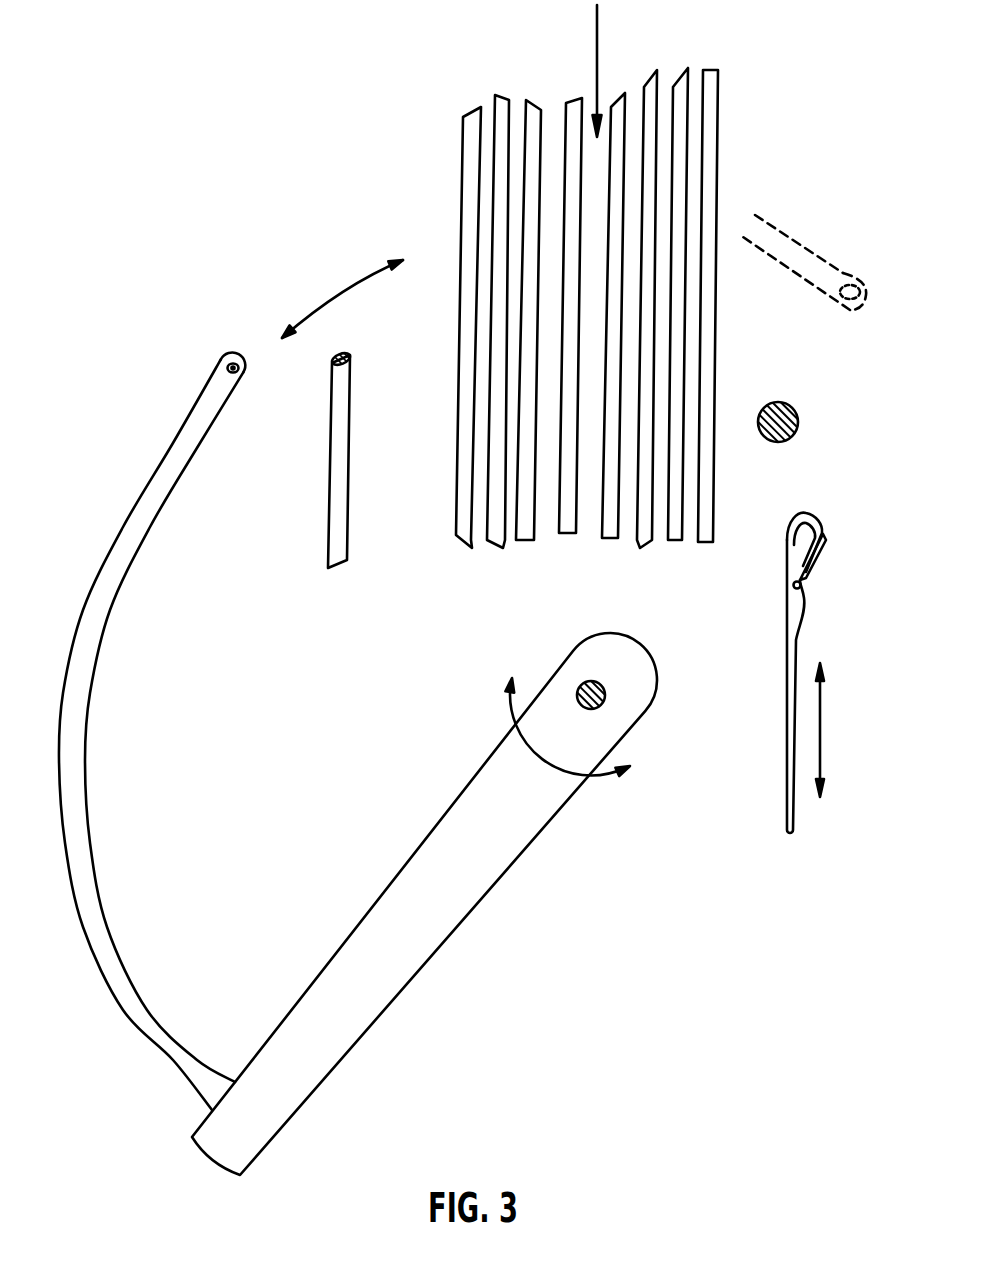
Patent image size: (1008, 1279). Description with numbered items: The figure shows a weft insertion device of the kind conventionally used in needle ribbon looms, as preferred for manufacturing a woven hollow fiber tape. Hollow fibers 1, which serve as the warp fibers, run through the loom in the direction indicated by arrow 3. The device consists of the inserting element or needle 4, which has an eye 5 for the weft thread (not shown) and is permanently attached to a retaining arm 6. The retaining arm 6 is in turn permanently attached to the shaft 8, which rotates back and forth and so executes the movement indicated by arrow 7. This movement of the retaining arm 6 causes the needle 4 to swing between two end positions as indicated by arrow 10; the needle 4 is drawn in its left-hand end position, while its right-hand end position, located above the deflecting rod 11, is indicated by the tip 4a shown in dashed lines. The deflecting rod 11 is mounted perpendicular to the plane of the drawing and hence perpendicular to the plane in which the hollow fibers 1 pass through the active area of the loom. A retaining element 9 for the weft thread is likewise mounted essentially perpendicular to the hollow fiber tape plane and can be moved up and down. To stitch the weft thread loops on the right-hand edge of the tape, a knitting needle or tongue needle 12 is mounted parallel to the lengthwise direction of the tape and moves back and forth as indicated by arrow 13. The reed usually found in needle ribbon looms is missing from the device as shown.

The hollow fibers 1 is at (710, 133).
The arrow 3 is at (597, 47).
The inserting element (needle) 4 is at (183, 420).
The tip of needle 4a is at (810, 257).
The eye 5 is at (228, 365).
The retaining arm 6 is at (460, 893).
The arrow 7 is at (592, 777).
The shaft 8 is at (605, 695).
The retaining element 9 is at (350, 362).
The arrow 10 is at (350, 288).
The deflecting rod 11 is at (797, 420).
The knitting needle (tongue needle) 12 is at (797, 618).
The arrow 13 is at (820, 732).